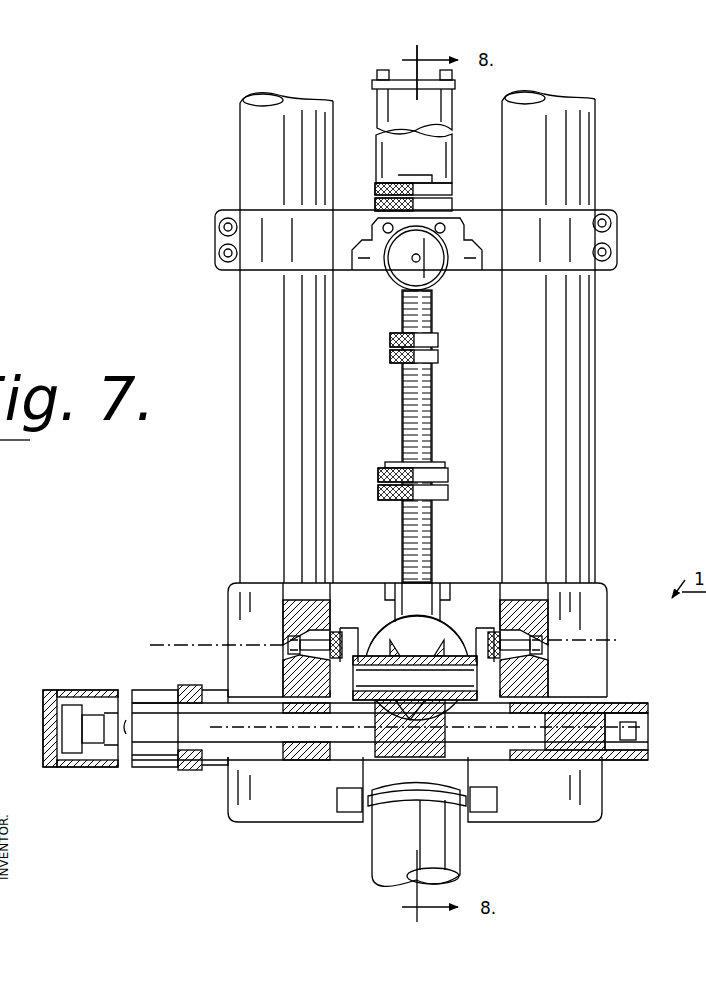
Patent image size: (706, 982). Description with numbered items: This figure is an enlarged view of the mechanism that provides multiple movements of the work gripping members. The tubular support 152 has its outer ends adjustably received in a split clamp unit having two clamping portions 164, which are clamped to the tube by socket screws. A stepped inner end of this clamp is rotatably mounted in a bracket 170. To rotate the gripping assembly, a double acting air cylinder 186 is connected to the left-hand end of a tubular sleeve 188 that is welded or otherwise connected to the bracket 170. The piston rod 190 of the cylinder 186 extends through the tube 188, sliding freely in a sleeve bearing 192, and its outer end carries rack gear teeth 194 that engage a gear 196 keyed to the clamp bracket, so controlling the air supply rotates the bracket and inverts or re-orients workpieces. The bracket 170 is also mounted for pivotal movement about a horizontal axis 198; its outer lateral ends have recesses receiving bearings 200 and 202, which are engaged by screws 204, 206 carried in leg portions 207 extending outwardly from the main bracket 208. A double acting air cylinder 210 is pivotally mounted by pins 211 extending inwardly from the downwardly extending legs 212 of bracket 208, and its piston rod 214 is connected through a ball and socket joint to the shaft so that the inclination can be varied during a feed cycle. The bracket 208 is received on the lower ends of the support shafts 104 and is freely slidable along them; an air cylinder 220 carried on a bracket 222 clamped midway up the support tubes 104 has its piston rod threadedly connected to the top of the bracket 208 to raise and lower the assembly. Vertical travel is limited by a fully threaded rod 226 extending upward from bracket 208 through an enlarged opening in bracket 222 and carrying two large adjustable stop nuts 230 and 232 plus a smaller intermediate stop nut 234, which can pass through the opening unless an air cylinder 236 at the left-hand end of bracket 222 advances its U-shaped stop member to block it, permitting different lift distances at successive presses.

The support shafts 104 is at (240, 460).
The tubular support 152 is at (476, 680).
The clamping portions 164 is at (392, 590).
The bracket 170 is at (442, 647).
The double acting air cylinder 186 is at (132, 772).
The tubular sleeve 188 is at (340, 790).
The piston rod 190 is at (165, 765).
The sleeve bearing 192 is at (262, 758).
The rack gear teeth 194 is at (300, 722).
The gear 196 is at (430, 716).
The horizontal axis 198 is at (210, 644).
The bearing 200 is at (500, 642).
The bearing 202 is at (330, 640).
The screw 204 is at (520, 662).
The screw 206 is at (300, 656).
The leg portions 207 is at (300, 583).
The main bracket 208 is at (614, 800).
The double acting air cylinder 210 is at (462, 862).
The pins 211 is at (372, 805).
The downwardly extending legs 212 is at (270, 822).
The piston rod 214 is at (430, 768).
The air cylinder 220 is at (455, 100).
The bracket 222 is at (593, 210).
The rod 226 is at (402, 311).
The adjustable stop nut 230 is at (440, 500).
The adjustable stop nut 232 is at (452, 188).
The intermediate stop nut 234 is at (437, 362).
The air cylinder 236 is at (440, 290).